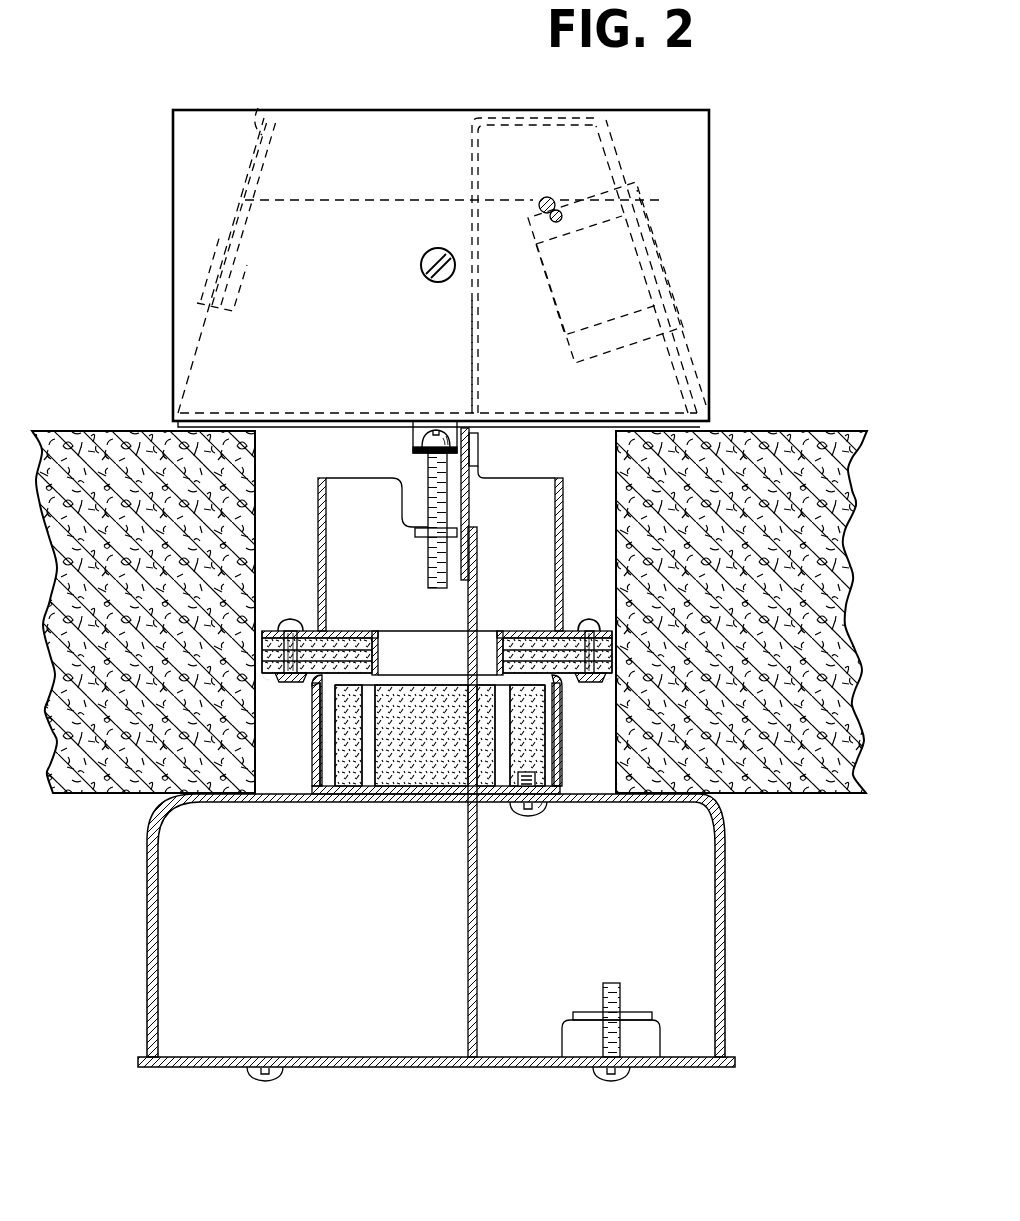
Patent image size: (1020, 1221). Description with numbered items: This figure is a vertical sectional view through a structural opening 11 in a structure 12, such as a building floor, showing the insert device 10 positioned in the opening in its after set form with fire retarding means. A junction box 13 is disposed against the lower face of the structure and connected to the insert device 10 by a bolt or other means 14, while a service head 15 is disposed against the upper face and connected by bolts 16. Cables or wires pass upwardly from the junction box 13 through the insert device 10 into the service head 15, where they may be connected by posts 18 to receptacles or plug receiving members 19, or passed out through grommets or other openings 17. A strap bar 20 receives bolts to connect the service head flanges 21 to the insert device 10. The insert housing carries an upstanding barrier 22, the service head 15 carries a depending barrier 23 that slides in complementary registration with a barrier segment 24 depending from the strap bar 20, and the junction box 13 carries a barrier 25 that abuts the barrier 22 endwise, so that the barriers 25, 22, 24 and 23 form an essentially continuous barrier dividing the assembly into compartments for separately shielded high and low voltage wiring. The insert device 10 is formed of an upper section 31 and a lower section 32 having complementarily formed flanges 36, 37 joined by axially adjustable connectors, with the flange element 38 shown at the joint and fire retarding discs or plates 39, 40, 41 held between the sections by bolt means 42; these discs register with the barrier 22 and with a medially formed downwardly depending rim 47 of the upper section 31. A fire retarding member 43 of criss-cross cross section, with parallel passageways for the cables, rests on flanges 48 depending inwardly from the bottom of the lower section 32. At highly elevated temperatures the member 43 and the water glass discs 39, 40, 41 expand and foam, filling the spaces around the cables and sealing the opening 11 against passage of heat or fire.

The insert device 10 is at (530, 476).
The structural opening 11 is at (257, 473).
The structure 12 is at (763, 462).
The junction box 13 is at (724, 906).
The bolt 14 is at (548, 812).
The service head 15 is at (710, 186).
The bolts 16 is at (428, 470).
The grommets or openings 17 is at (257, 107).
The posts 18 is at (565, 195).
The plug receiving members 19 is at (668, 317).
The strap bar 20 is at (425, 431).
The service head flanges 21 is at (416, 534).
The upstanding barrier 22 is at (477, 553).
The depending barrier 23 is at (479, 349).
The barrier segment 24 is at (471, 497).
The junction box barrier 25 is at (483, 915).
The upper section 31 is at (357, 479).
The lower section 32 is at (313, 754).
The flange 36 is at (504, 640).
The flange 37 is at (561, 690).
The flange plate 38 is at (290, 631).
The fire retarding disc 39 is at (354, 638).
The fire retarding disc 40 is at (536, 640).
The fire retarding disc 41 is at (282, 680).
The bolt 42 is at (303, 684).
The fire retarding member 43 is at (431, 786).
The downwardly depending rim 47 is at (386, 640).
The flanges 48 is at (323, 802).